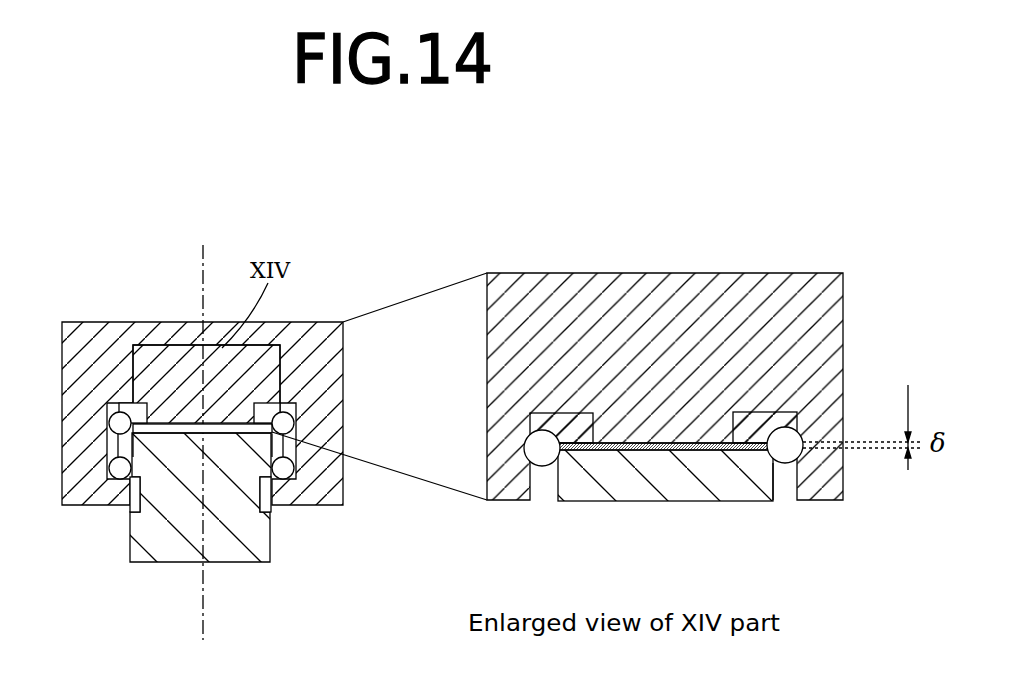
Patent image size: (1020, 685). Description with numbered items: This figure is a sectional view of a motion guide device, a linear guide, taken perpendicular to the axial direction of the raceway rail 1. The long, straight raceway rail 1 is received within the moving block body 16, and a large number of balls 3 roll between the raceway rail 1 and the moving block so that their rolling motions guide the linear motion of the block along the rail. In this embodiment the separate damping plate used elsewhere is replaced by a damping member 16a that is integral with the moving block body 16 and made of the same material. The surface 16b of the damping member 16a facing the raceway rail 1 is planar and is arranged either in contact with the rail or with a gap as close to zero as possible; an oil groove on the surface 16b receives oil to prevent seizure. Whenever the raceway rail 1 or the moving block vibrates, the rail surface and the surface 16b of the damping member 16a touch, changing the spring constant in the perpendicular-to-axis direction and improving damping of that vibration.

The raceway rail 1 is at (168, 543).
The balls 3 is at (116, 478).
The moving block body 16 is at (300, 330).
The damping member 16a is at (188, 418).
The surface of the damping member 16b is at (680, 443).